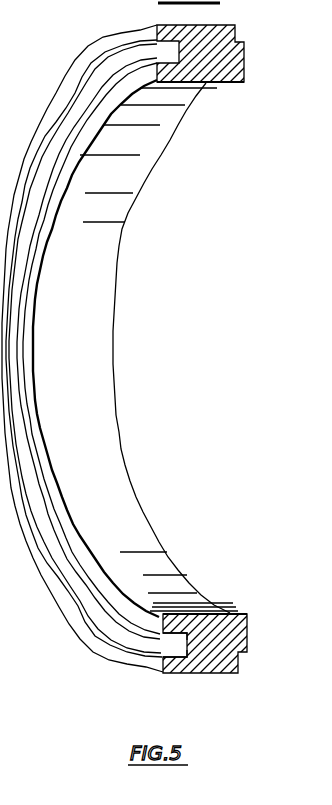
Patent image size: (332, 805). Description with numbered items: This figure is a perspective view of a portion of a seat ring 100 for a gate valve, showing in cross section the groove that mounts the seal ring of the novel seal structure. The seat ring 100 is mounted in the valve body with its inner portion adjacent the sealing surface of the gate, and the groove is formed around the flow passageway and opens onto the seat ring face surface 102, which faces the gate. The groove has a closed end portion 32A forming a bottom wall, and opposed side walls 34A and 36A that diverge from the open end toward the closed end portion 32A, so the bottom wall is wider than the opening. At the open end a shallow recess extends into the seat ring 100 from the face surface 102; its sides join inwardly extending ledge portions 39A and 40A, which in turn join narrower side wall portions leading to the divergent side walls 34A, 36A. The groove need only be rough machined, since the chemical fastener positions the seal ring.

The seat ring 100 is at (82, 317).
The seat ring face surface 102 is at (133, 615).
The ledge portion 40A is at (152, 40).
The ledge portion 39A is at (147, 65).
The side wall 34A is at (182, 633).
The closed end portion 32A is at (199, 633).
The side wall 36A is at (175, 657).